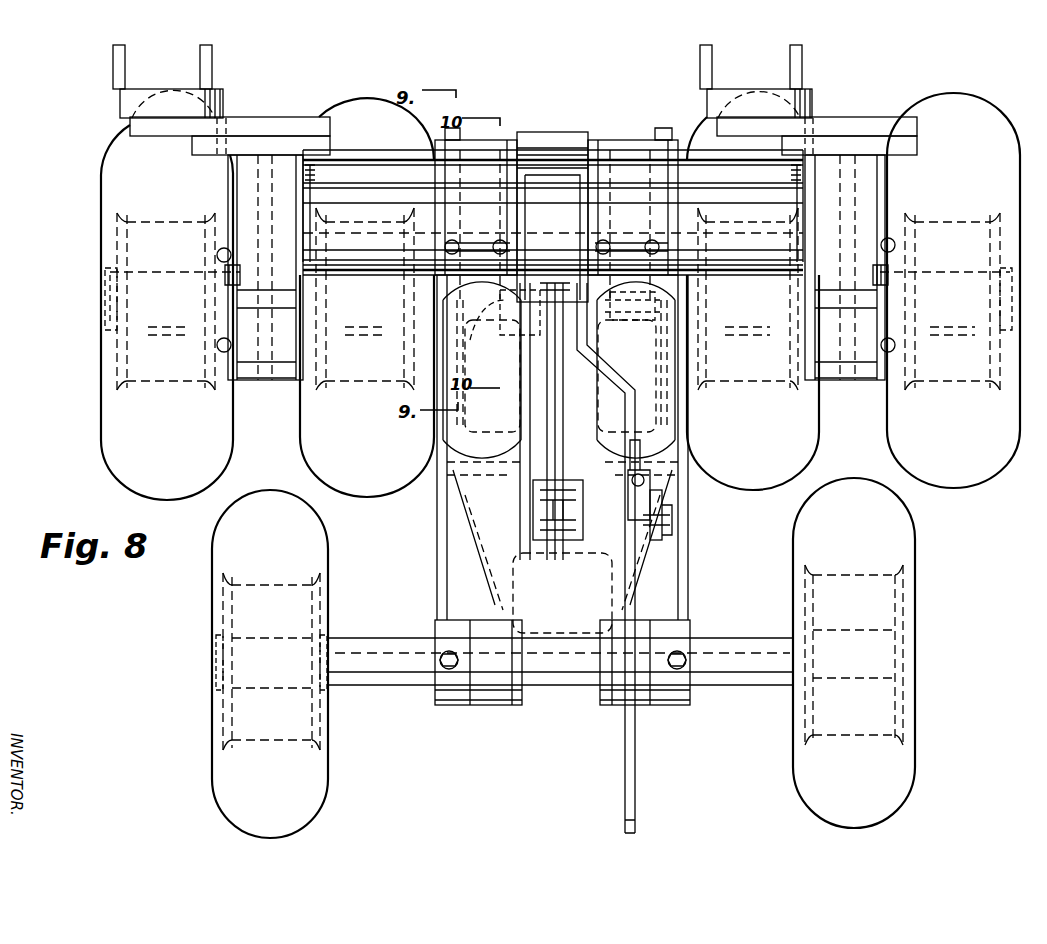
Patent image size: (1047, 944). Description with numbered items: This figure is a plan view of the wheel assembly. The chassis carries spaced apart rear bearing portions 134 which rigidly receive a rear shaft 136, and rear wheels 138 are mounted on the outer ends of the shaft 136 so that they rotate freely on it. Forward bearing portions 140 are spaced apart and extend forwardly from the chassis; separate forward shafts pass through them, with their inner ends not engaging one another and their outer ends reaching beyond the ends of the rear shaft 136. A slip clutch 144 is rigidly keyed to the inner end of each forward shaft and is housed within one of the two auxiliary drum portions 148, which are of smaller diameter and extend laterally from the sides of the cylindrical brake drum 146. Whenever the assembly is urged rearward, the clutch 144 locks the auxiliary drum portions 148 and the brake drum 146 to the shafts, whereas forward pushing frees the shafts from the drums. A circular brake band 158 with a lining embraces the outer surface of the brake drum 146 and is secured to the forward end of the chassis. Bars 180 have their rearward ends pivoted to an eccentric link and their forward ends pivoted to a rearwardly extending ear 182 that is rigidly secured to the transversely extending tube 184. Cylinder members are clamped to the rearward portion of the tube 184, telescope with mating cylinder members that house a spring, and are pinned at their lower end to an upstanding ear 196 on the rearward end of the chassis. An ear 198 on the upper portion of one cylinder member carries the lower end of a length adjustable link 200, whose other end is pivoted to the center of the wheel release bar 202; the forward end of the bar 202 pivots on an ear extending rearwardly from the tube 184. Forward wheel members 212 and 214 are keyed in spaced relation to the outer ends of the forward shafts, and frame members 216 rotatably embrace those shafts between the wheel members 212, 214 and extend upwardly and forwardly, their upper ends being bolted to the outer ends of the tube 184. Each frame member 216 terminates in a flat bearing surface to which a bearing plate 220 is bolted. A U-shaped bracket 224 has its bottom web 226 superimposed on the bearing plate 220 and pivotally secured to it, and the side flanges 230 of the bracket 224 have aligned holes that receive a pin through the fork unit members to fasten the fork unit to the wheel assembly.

The rear bearing portions 134 is at (470, 705).
The shaft 136 is at (385, 640).
The rear wheels 138 is at (270, 822).
The forward bearing portions 140 is at (452, 178).
The slip clutch 144 is at (495, 340).
The cylindrical brake drum 146 is at (680, 200).
The auxiliary drum portions 148 is at (488, 241).
The circular brake band 158 is at (555, 132).
The bars 180 is at (545, 398).
The ear 182 is at (556, 282).
The tube 184 is at (330, 160).
The ear 196 is at (565, 530).
The ear 198 is at (660, 538).
The length adjustable link 200 is at (650, 500).
The wheel release bar 202 is at (624, 760).
The forward wheel member 212 is at (391, 467).
The forward wheel member 214 is at (194, 472).
The frame members 216 is at (240, 204).
The bearing plate 220 is at (250, 117).
The U-shaped bracket 224 is at (104, 112).
The bottom web 226 is at (183, 85).
The side flanges 230 is at (112, 60).